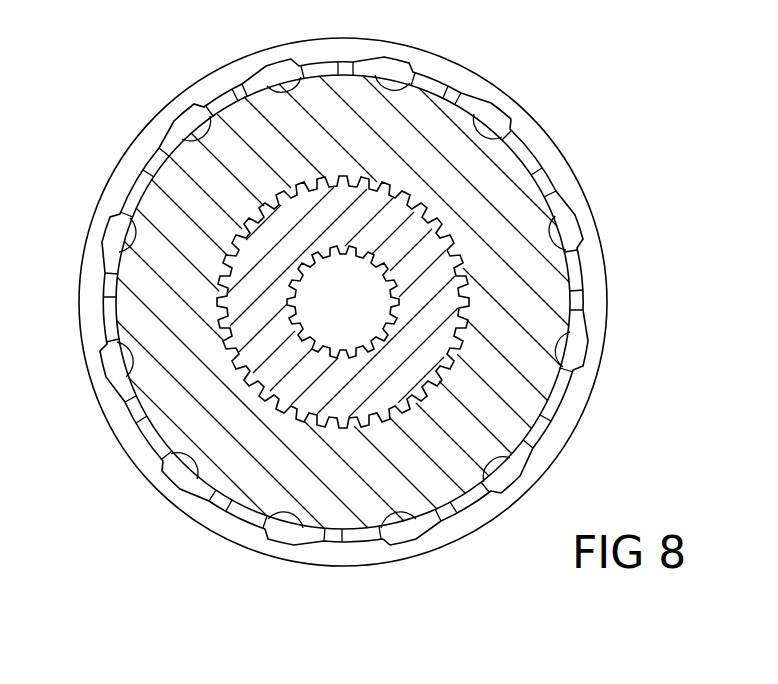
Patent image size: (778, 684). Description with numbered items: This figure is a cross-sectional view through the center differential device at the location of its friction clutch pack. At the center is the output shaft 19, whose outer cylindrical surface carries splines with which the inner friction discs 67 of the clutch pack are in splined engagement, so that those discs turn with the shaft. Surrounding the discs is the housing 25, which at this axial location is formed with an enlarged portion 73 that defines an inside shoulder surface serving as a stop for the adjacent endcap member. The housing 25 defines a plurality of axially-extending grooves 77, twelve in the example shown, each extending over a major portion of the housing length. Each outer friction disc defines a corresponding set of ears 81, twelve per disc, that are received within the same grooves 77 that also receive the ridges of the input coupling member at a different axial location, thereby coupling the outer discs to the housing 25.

The housing 25 is at (231, 48).
The output shaft 19 is at (316, 242).
The inner friction discs 67 is at (548, 292).
The enlarged portion 73 is at (553, 443).
The grooves 77 is at (527, 150).
The ears 81 is at (395, 74).